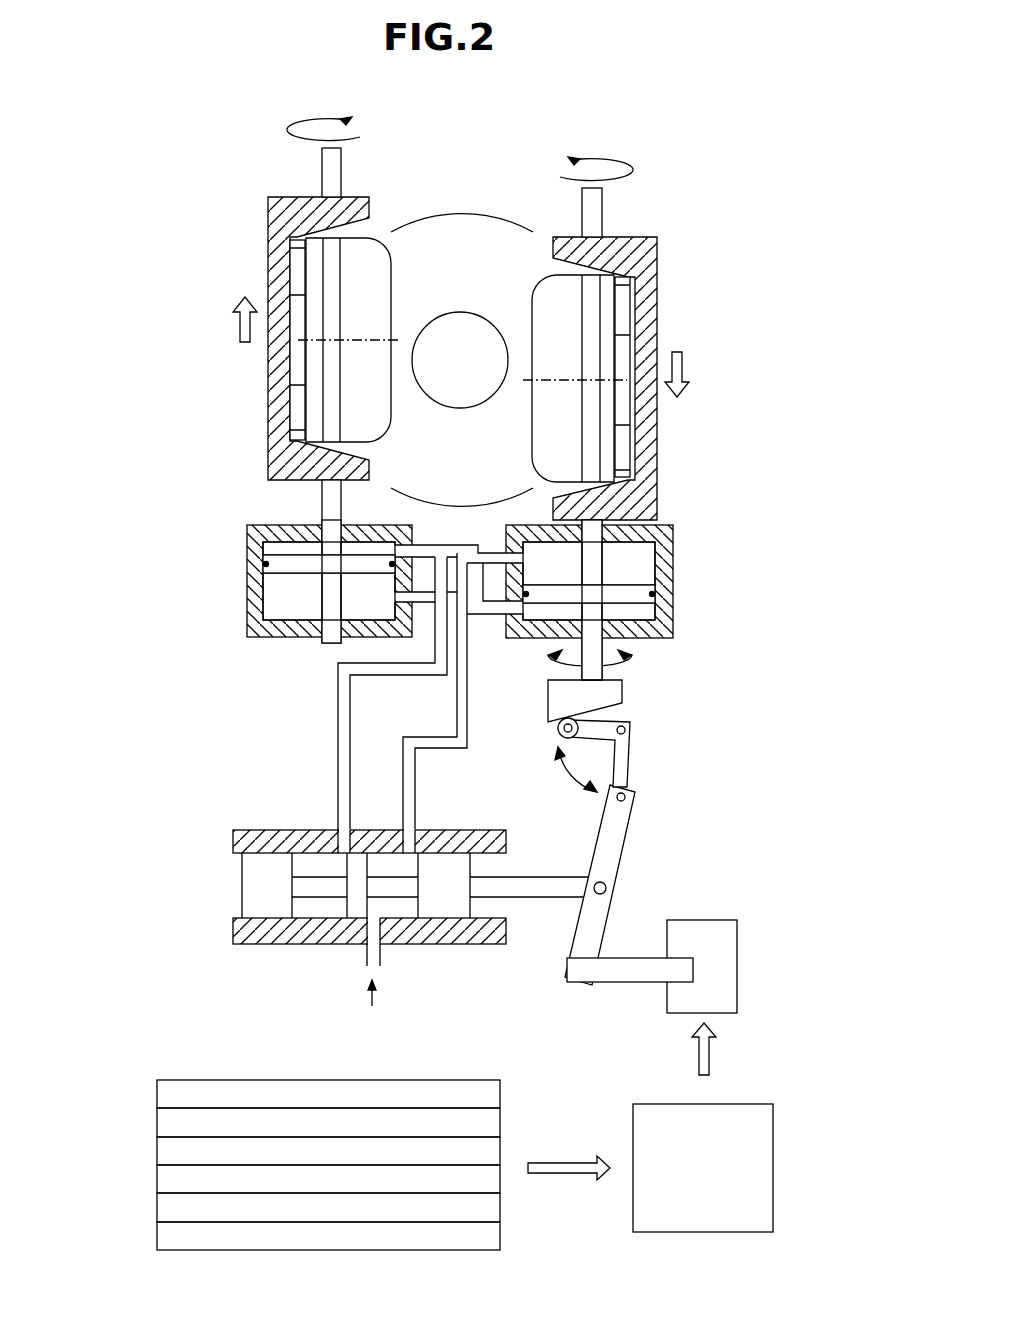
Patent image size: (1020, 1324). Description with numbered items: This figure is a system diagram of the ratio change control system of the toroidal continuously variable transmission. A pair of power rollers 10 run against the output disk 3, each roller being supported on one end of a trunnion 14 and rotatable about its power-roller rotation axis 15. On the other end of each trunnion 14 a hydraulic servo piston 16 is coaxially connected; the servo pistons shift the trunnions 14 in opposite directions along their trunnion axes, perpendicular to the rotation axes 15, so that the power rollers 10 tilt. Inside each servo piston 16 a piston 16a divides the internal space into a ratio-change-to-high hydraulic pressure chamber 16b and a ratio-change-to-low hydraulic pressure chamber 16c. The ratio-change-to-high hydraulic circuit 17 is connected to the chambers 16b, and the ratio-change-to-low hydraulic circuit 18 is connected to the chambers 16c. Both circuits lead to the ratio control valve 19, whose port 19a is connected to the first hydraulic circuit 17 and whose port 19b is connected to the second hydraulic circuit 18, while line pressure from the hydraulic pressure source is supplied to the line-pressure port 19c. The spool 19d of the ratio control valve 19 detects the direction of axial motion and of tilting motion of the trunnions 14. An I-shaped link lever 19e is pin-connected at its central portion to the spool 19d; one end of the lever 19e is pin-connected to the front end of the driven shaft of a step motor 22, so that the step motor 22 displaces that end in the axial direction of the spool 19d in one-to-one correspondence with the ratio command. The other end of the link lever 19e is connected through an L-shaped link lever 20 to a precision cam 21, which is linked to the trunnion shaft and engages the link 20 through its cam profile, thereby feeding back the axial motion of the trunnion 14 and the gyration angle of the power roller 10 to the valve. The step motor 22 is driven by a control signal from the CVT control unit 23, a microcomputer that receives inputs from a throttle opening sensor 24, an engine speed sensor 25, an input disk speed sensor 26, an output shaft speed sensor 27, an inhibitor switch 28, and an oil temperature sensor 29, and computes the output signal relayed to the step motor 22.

The output disk 3 is at (455, 225).
The first power roller 10 is at (542, 313).
The trunnion 14 is at (268, 412).
The power-roller rotation axis 15 is at (397, 326).
The hydraulic servo piston 16 is at (247, 543).
The piston 16a is at (295, 567).
The ratio-change-to-high hydraulic pressure chamber 16b is at (358, 547).
The ratio-change-to-low hydraulic pressure chamber 16c is at (540, 548).
The ratio-change-to-high hydraulic circuit 17 is at (337, 722).
The ratio-change-to-low hydraulic circuit 18 is at (468, 714).
The ratio control valve 19 is at (239, 830).
The port 19a is at (343, 833).
The port 19b is at (420, 833).
The line-pressure port 19c is at (381, 958).
The spool 19d is at (250, 890).
The I-shaped link lever 19e is at (632, 838).
The L-shaped link lever 20 is at (628, 758).
The precision cam 21 is at (623, 690).
The step motor 22 is at (703, 920).
The CVT control unit 23 is at (753, 1104).
The throttle opening sensor 24 is at (157, 1096).
The engine speed sensor 25 is at (157, 1124).
The input disk speed sensor 26 is at (157, 1152).
The output shaft speed sensor 27 is at (157, 1180).
The inhibitor switch 28 is at (157, 1209).
The oil temperature sensor 29 is at (157, 1237).